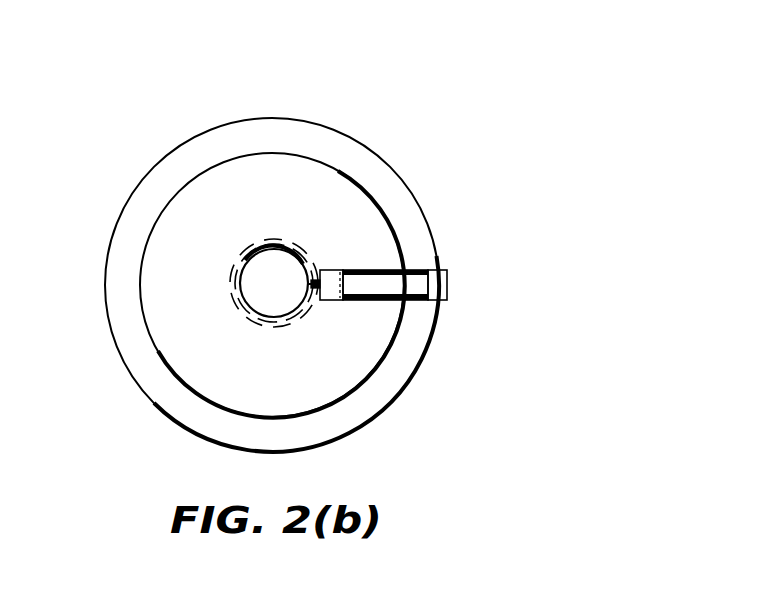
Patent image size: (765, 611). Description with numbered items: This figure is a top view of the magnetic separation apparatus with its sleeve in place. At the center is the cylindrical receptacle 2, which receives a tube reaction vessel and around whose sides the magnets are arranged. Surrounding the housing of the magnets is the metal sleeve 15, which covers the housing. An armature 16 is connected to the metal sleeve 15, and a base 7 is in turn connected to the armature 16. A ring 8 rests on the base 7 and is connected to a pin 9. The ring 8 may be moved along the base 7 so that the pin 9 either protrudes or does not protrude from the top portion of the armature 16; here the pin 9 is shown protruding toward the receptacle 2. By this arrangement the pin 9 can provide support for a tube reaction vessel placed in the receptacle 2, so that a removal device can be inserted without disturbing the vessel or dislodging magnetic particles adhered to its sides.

The cylindrical receptacle 2 is at (253, 268).
The base 7 is at (442, 288).
The ring 8 is at (418, 270).
The pin 9 is at (311, 284).
The metal sleeve 15 is at (153, 348).
The armature 16 is at (330, 270).